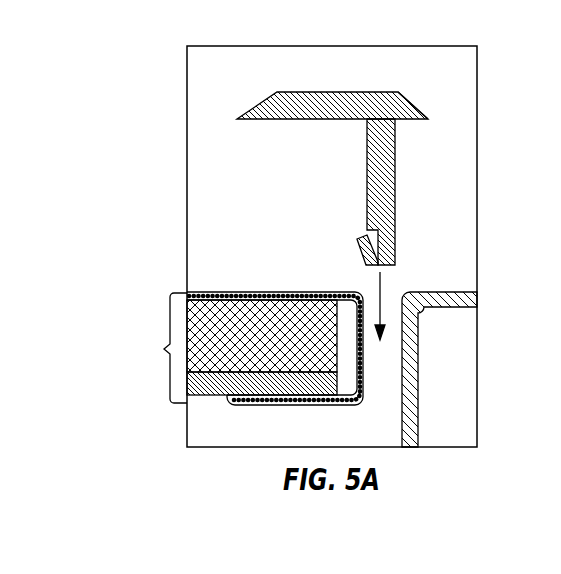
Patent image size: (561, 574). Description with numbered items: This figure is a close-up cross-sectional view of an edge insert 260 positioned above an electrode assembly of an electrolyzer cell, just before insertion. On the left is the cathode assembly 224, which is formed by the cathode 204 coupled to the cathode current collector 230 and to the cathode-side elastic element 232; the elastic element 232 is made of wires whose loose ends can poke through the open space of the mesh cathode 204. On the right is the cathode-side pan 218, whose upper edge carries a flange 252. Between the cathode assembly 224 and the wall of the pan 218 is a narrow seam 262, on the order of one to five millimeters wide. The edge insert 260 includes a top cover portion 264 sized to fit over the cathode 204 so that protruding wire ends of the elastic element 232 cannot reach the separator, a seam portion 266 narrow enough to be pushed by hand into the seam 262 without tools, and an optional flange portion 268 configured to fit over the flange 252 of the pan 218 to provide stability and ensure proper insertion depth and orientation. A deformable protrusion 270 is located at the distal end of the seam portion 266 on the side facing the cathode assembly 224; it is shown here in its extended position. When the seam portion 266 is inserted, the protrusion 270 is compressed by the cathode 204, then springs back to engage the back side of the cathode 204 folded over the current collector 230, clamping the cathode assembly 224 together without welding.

The cathode 204 is at (275, 293).
The cathode-side pan 218 is at (418, 398).
The cathode assembly 224 is at (164, 349).
The cathode current collector 230 is at (213, 389).
The cathode-side elastic element 232 is at (275, 338).
The flange 252 is at (454, 298).
The edge insert 260 is at (302, 75).
The seam 262 is at (398, 289).
The top cover portion 264 is at (300, 108).
The seam portion 266 is at (384, 178).
The flange portion 268 is at (409, 108).
The deformable protrusion 270 is at (356, 244).